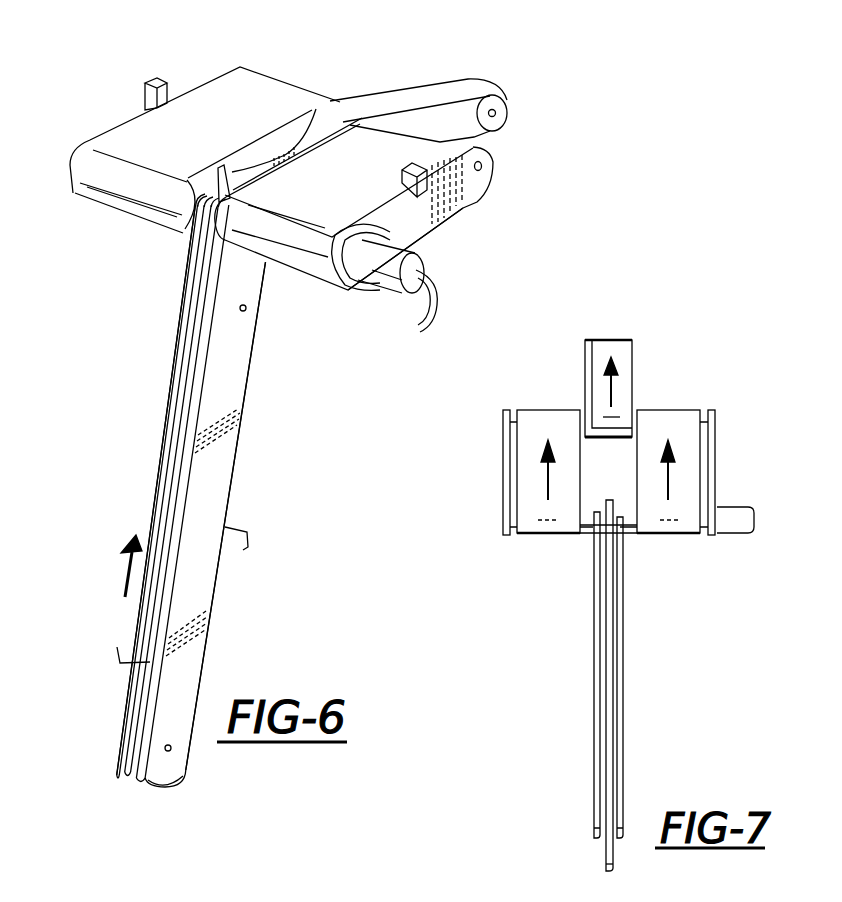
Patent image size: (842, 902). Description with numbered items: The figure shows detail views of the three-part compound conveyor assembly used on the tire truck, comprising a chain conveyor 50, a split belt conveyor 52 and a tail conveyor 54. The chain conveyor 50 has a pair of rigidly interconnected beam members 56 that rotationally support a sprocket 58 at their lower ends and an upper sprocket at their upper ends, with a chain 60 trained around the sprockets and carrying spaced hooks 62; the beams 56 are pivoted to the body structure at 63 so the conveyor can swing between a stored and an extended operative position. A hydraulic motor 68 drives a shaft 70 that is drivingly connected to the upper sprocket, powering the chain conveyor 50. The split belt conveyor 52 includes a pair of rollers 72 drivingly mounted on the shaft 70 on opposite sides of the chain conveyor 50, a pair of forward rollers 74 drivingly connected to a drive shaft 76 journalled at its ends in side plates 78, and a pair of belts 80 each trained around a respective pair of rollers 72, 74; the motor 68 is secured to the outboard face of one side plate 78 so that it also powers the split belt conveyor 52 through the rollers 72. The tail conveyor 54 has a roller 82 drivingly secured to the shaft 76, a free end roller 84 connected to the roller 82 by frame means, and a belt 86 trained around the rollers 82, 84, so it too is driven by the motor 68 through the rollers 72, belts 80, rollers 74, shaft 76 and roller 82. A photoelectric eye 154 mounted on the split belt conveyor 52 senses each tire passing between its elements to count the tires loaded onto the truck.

In FIG. 6, the chain conveyor 50 is at (173, 370).
In FIG. 6, the split belt conveyor 52 is at (103, 203).
In FIG. 6, the tail conveyor 54 is at (402, 93).
In FIG. 6, the beam members 56 is at (157, 503).
In FIG. 7, the beam members 56 is at (598, 732).
In FIG. 6, the sprocket 58 is at (158, 778).
In FIG. 6, the chain 60 is at (313, 152).
In FIG. 7, the chain 60 is at (608, 655).
In FIG. 6, the hooks 62 is at (241, 70).
In FIG. 6, the pivot 63 is at (248, 307).
In FIG. 6, the hydraulic motor 68 is at (362, 290).
In FIG. 7, the hydraulic motor 68 is at (752, 532).
In FIG. 7, the shaft 70 is at (630, 535).
In FIG. 7, the rollers 72 is at (557, 528).
In FIG. 7, the forward rollers 74 is at (530, 416).
In FIG. 6, the drive shaft 76 is at (483, 167).
In FIG. 7, the drive shaft 76 is at (637, 410).
In FIG. 6, the side plates 78 is at (440, 237).
In FIG. 7, the side plates 78 is at (503, 468).
In FIG. 6, the belts 80 is at (281, 178).
In FIG. 7, the belts 80 is at (523, 490).
In FIG. 7, the roller 82 is at (603, 410).
In FIG. 6, the free end roller 84 is at (507, 112).
In FIG. 7, the free end roller 84 is at (603, 340).
In FIG. 6, the belt 86 is at (456, 93).
In FIG. 7, the belt 86 is at (627, 368).
In FIG. 6, the photoelectric eye 154 is at (165, 82).